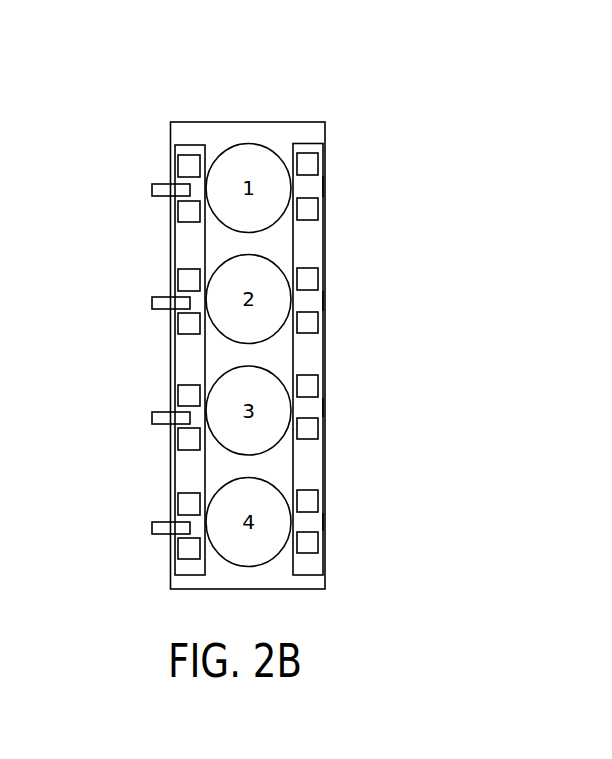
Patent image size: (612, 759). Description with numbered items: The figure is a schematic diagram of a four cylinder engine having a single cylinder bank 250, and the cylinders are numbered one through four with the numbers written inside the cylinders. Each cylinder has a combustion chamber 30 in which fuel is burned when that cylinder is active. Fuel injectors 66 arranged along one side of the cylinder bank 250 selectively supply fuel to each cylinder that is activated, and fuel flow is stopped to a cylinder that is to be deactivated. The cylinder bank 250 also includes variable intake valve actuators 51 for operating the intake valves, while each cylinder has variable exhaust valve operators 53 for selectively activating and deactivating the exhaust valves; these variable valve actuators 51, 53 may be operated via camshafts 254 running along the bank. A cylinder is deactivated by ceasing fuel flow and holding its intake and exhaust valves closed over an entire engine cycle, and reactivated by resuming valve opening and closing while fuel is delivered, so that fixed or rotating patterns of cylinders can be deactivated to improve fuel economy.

The single cylinder bank 250 is at (291, 75).
The camshafts 254 is at (190, 147).
The combustion chamber 30 is at (323, 187).
The variable intake valve actuators 51 is at (187, 165).
The variable exhaust valve operators 53 is at (310, 165).
The fuel injectors 66 is at (157, 189).